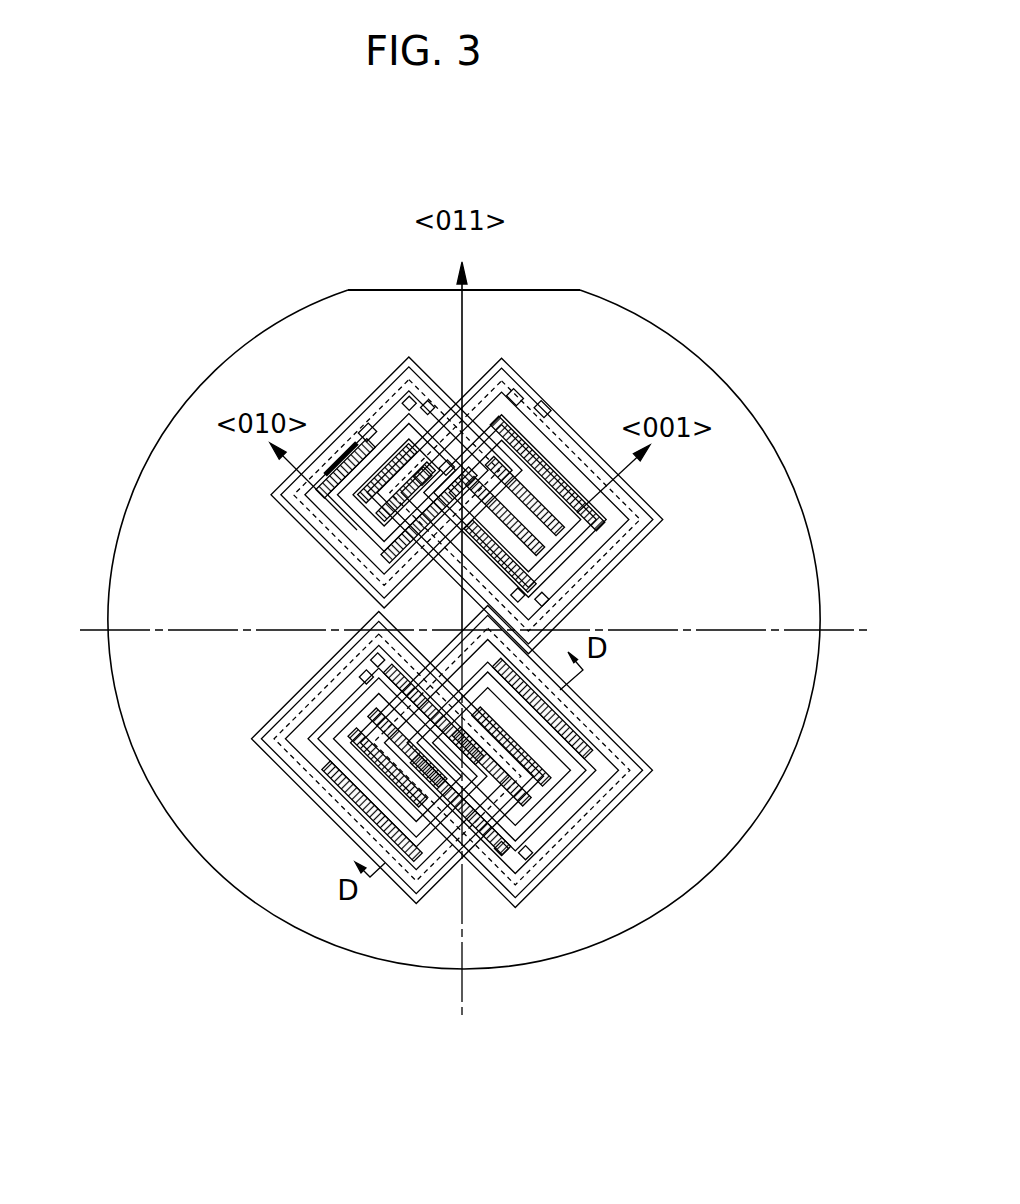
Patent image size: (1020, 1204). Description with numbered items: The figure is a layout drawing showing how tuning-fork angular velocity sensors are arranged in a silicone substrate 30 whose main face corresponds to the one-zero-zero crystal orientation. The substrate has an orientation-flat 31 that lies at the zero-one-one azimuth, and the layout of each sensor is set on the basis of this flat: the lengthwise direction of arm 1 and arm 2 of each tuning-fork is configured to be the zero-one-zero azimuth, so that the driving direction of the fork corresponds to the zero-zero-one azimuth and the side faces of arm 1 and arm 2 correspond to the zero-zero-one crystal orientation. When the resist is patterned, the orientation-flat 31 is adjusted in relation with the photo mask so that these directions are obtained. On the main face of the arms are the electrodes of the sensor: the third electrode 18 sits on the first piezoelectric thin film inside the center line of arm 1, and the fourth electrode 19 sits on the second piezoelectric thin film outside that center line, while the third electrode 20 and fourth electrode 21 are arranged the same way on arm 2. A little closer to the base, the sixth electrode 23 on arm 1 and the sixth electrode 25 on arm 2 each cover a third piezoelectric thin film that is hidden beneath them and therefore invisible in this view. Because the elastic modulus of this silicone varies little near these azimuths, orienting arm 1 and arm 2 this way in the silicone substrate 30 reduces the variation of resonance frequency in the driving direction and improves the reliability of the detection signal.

The arm 1 is at (344, 450).
The arm 2 is at (505, 367).
The third electrode 18 is at (422, 478).
The fourth electrode 19 is at (366, 440).
The third electrode 20 is at (515, 398).
The fourth electrode 21 is at (543, 410).
The sixth electrode 23 is at (445, 468).
The sixth electrode 25 is at (583, 440).
The silicone substrate 30 is at (660, 865).
The orientation-flat 31 is at (523, 290).